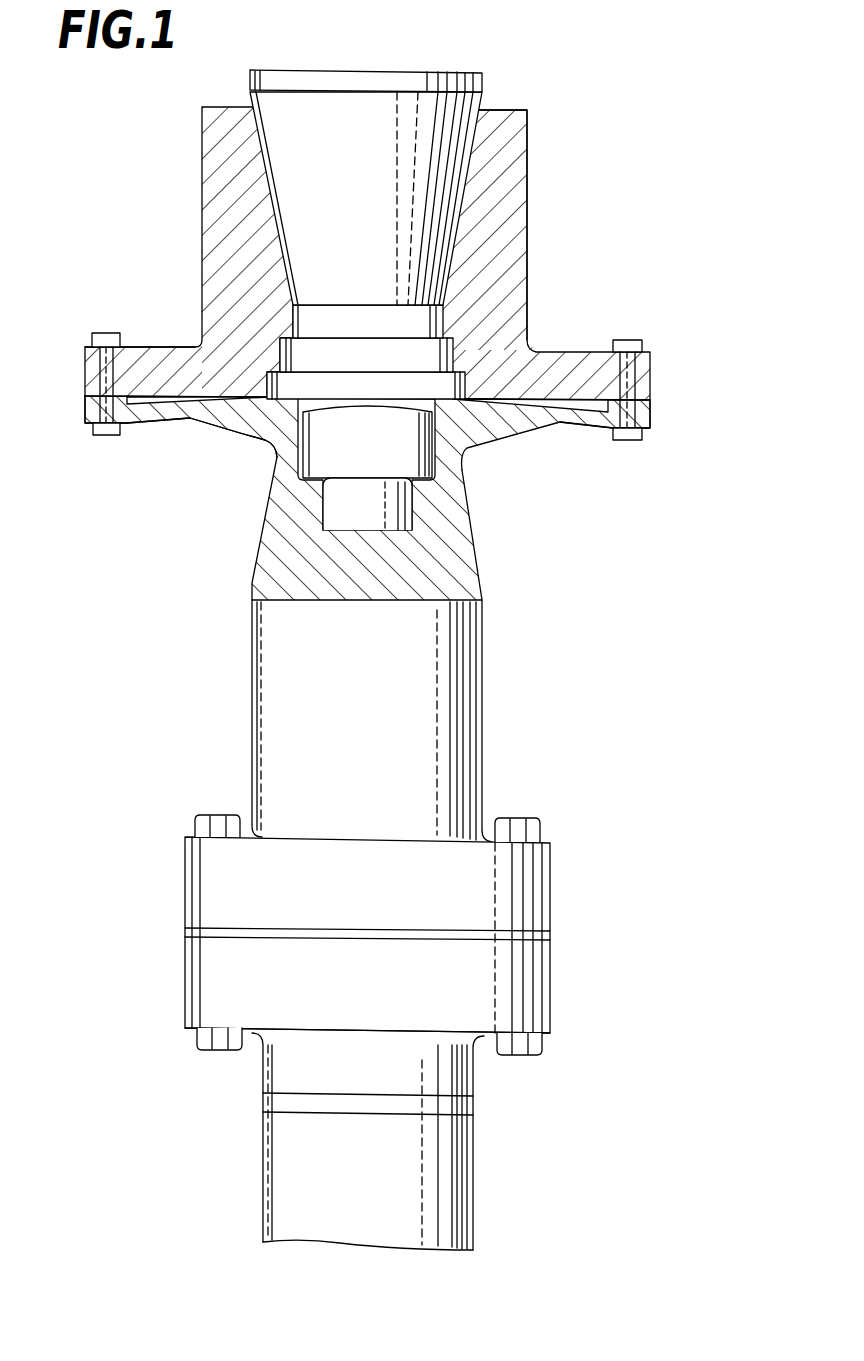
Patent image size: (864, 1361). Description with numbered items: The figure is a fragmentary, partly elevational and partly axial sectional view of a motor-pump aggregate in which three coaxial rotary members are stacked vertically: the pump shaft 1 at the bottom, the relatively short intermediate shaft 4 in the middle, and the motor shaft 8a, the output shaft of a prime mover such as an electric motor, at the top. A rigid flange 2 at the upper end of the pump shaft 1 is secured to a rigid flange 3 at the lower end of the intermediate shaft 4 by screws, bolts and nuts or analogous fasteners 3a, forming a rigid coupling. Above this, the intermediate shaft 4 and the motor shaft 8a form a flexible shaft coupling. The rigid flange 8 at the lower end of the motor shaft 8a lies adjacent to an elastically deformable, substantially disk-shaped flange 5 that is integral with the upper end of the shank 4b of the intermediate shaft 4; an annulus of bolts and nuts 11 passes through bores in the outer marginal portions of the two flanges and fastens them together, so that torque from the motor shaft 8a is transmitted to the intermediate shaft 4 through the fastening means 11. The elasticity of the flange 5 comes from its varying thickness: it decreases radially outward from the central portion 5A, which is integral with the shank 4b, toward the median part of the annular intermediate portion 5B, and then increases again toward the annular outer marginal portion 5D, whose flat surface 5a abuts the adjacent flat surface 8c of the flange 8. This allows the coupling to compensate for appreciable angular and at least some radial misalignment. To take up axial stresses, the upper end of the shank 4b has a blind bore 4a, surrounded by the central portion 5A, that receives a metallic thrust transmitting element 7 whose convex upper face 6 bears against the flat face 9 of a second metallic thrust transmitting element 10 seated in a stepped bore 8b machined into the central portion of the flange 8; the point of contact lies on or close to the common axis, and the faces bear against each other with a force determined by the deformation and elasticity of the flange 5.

The pump shaft 1 is at (475, 1180).
The rigid flange 2 is at (533, 992).
The rigid flange 3 is at (534, 895).
The fasteners 3a is at (538, 820).
The intermediate shaft 4 is at (240, 695).
The blind bore 4a is at (310, 494).
The shank 4b is at (467, 685).
The elastically deformable flange 5 is at (652, 418).
The flat surface 5a is at (616, 392).
The central portion 5A is at (273, 435).
The annular intermediate portion 5B is at (190, 423).
The annular outer marginal portion 5D is at (85, 408).
The convex upper face 6 is at (350, 402).
The thrust transmitting element 7 is at (412, 520).
The rigid flange 8 is at (652, 376).
The motor shaft 8a is at (540, 152).
The stepped bore 8b is at (280, 355).
The flat surface 8c is at (123, 424).
The flat face 9 is at (436, 396).
The thrust transmitting element 10 is at (440, 355).
The bolts and nuts 11 is at (108, 333).